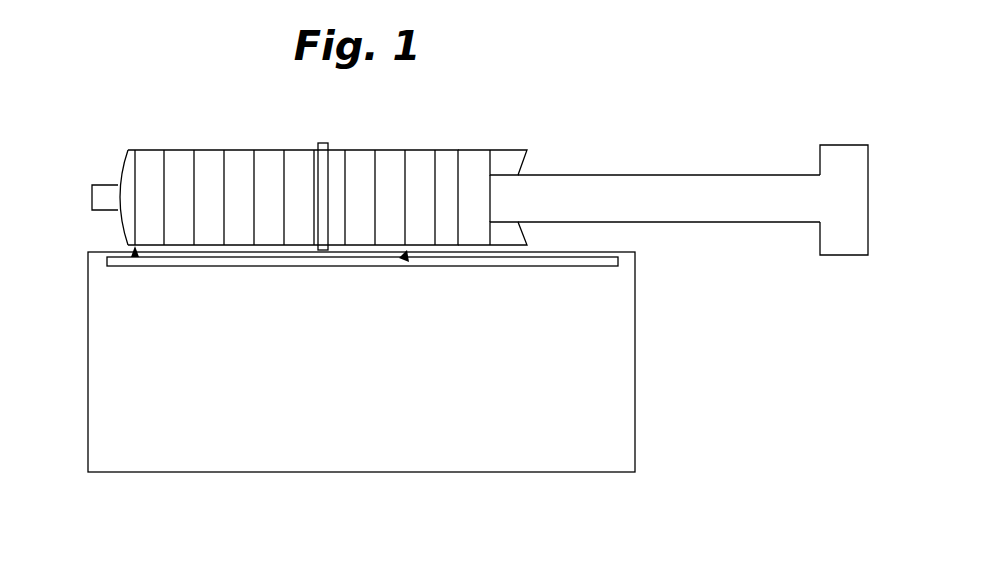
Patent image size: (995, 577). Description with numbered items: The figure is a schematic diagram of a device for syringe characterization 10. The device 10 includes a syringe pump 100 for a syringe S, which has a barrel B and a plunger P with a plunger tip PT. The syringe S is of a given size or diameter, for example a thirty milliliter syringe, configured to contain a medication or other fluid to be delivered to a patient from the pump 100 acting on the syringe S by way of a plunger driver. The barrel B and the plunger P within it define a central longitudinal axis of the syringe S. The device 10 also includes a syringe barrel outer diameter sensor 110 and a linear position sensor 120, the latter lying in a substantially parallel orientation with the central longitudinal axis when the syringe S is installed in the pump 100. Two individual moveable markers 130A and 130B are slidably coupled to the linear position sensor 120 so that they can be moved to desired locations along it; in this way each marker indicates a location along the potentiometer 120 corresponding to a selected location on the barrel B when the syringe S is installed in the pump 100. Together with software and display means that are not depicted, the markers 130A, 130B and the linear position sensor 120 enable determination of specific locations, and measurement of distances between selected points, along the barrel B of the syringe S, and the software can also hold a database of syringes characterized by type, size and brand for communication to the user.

The device for syringe characterization 10 is at (355, 561).
The syringe pump 100 is at (635, 338).
The syringe barrel outer diameter sensor 110 is at (325, 143).
The linear position sensor 120 is at (134, 249).
The moveable marker 130A is at (135, 256).
The moveable marker 130B is at (405, 258).
The syringe S is at (150, 125).
The barrel B is at (363, 151).
The plunger tip PT is at (455, 168).
The plunger P is at (638, 174).